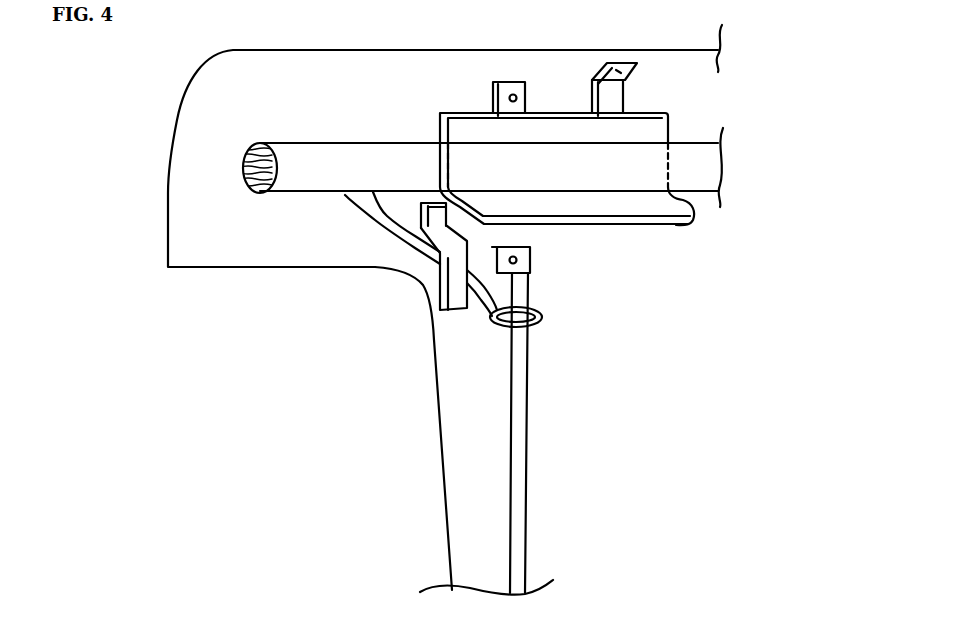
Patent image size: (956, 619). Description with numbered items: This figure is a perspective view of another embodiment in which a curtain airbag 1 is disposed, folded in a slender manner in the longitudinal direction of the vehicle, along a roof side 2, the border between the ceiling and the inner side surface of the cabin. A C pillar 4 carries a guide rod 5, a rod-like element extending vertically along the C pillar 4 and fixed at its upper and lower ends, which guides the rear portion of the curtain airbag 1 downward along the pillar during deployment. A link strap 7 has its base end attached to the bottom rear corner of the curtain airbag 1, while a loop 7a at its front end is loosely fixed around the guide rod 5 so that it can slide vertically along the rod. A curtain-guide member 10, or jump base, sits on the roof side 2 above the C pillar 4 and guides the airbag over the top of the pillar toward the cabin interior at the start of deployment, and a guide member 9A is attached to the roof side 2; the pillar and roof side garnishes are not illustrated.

The curtain airbag 1 is at (323, 153).
The roof side 2 is at (254, 98).
The C pillar 4 is at (463, 483).
The guide rod 5 is at (527, 528).
The link strap 7 is at (386, 229).
The loop 7a is at (542, 316).
The guide member 9A is at (440, 298).
The curtain-guide member 10 is at (645, 207).